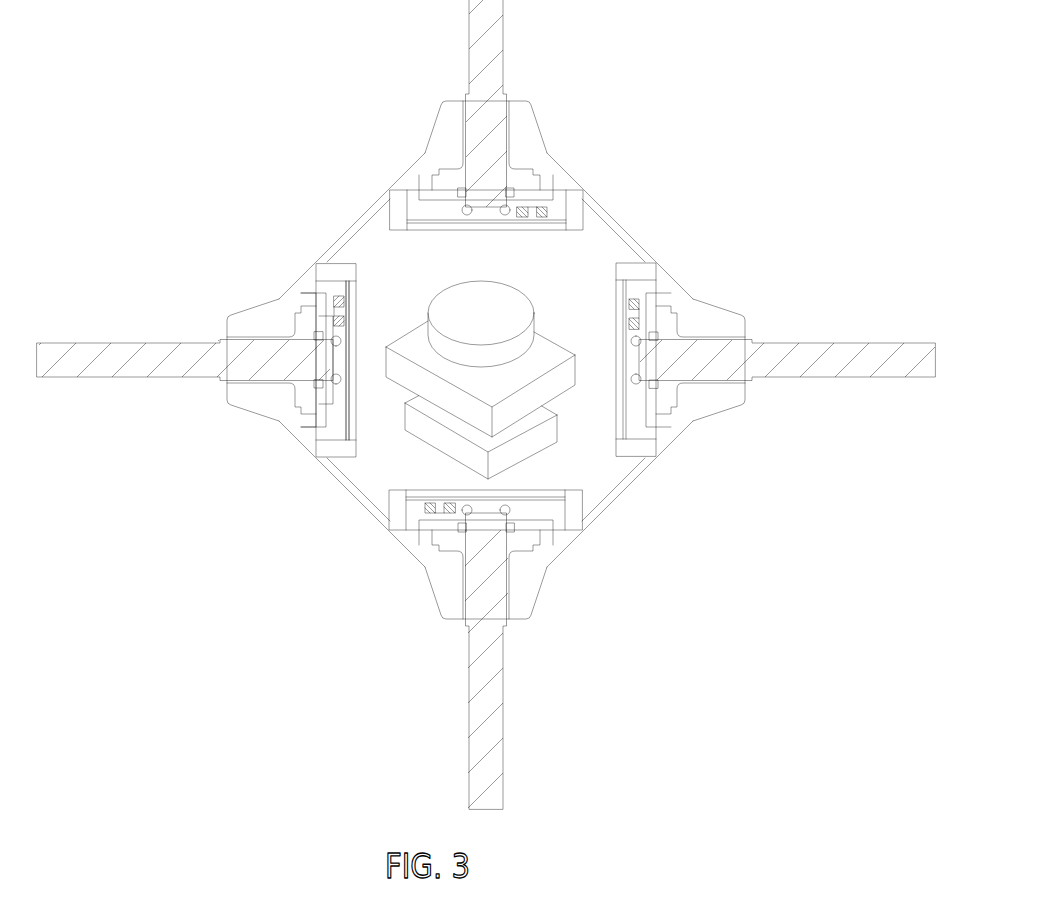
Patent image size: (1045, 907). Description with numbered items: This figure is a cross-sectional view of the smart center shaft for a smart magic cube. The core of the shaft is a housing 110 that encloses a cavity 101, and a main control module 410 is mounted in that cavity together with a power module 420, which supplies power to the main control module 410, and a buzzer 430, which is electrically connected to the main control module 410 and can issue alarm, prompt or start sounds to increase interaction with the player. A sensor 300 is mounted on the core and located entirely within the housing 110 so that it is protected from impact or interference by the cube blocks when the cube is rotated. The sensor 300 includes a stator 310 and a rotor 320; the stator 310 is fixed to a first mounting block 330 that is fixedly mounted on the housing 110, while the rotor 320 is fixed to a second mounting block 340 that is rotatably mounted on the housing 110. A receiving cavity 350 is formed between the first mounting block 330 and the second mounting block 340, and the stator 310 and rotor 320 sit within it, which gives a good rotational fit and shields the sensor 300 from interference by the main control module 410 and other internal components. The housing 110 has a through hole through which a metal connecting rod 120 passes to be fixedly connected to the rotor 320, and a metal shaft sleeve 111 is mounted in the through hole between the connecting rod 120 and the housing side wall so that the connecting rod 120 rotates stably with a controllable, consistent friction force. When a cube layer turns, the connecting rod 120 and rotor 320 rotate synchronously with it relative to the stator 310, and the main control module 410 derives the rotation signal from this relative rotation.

The cavity 101 is at (588, 268).
The housing 110 is at (413, 168).
The shaft sleeve 111 is at (240, 337).
The connecting rod 120 is at (65, 357).
The sensor 300 is at (195, 176).
The stator 310 is at (347, 298).
The rotor 320 is at (337, 310).
The first mounting block 330 is at (340, 430).
The second mounting block 340 is at (307, 387).
The receiving cavity 350 is at (340, 412).
The main control module 410 is at (572, 382).
The power module 420 is at (528, 440).
The buzzer 430 is at (505, 320).